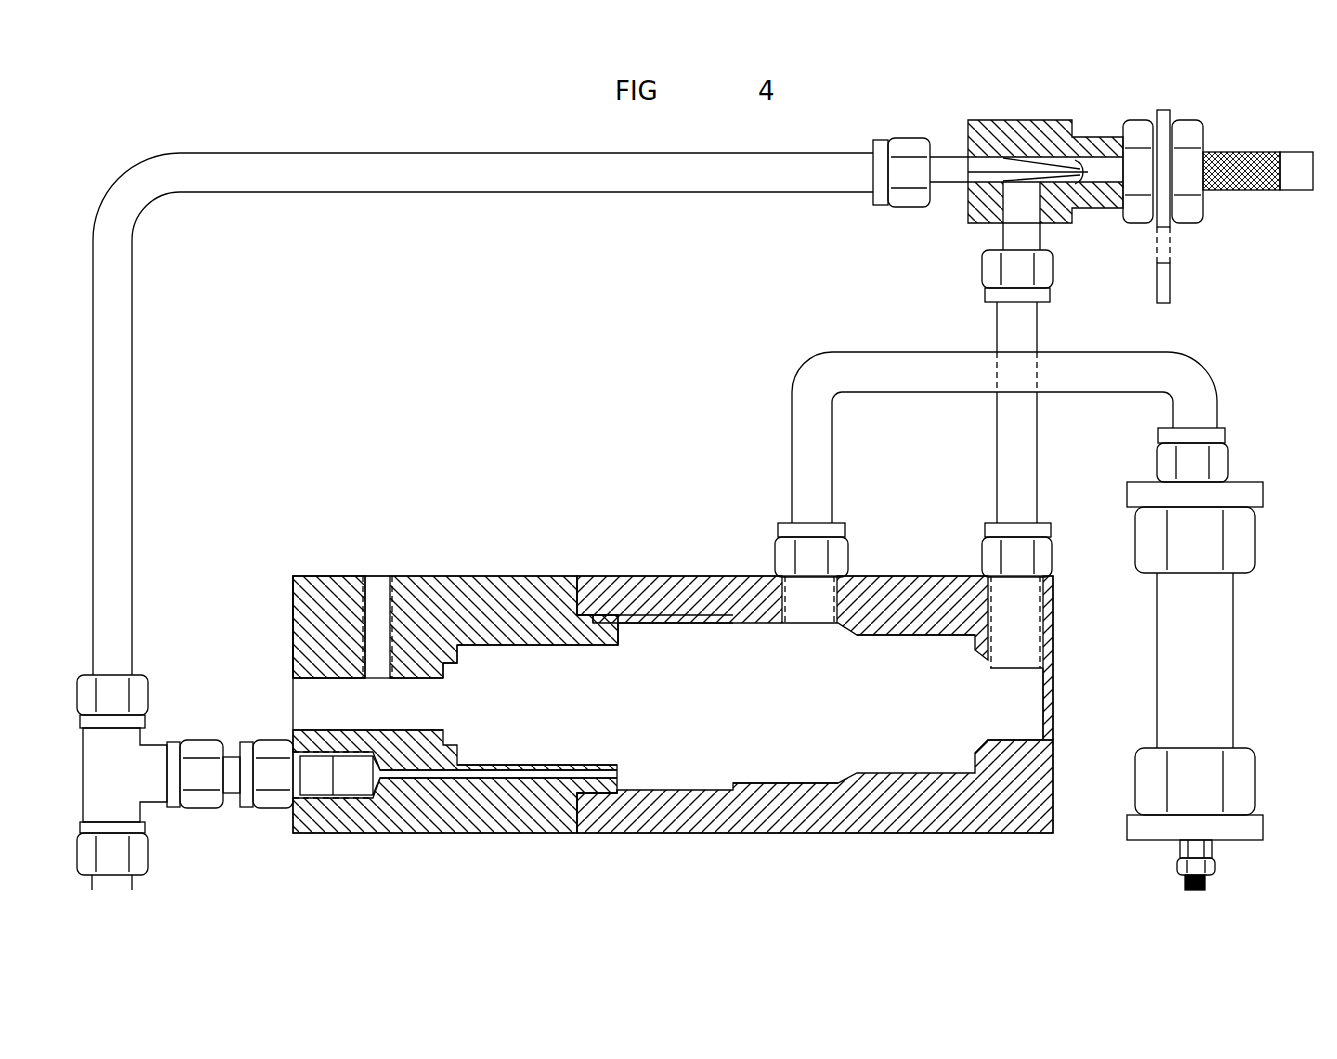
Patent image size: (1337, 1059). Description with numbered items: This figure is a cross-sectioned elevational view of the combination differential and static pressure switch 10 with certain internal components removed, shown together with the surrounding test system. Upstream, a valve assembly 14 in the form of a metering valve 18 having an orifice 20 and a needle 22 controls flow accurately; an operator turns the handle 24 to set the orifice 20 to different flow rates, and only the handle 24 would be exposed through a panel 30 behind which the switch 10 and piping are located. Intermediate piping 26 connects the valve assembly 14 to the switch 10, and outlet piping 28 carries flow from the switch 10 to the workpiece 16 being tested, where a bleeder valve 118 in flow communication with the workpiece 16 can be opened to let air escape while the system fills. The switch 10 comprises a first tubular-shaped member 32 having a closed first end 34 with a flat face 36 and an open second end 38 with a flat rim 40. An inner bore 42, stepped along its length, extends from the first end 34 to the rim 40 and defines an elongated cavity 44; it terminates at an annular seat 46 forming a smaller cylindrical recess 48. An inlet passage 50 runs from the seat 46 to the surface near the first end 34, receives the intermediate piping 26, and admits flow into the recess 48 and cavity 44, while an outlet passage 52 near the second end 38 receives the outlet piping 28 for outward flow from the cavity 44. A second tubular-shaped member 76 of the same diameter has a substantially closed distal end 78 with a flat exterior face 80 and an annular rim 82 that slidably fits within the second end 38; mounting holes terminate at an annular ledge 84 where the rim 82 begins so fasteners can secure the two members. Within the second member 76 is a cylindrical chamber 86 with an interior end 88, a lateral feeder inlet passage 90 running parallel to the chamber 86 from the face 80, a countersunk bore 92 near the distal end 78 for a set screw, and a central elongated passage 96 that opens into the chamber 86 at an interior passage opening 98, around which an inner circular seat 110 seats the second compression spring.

The combination differential and static pressure switch 10 is at (482, 428).
The valve assembly 14 is at (1236, 220).
The workpiece 16 is at (1233, 682).
The metering valve 18 is at (1088, 140).
The orifice 20 is at (953, 172).
The needle 22 is at (1040, 160).
The handle 24 is at (1205, 128).
The intermediate piping 26 is at (995, 322).
The outlet piping 28 is at (1218, 390).
The panel 30 is at (1172, 282).
The first tubular-shaped member 32 is at (616, 575).
The first end 34 is at (1072, 637).
The face 36 is at (1055, 740).
The second end 38 is at (628, 624).
The rim 40 is at (583, 600).
The inner bore 42 is at (921, 630).
The cavity 44 is at (728, 703).
The seat 46 is at (1043, 704).
The recess 48 is at (988, 736).
The inlet passage 50 is at (1017, 595).
The outlet passage 52 is at (787, 606).
The second tubular-shaped member 76 is at (315, 575).
The distal end 78 is at (270, 611).
The exterior face 80 is at (293, 652).
The annular rim 82 is at (664, 780).
The annular ledge 84 is at (573, 837).
The cylindrical chamber 86 is at (420, 704).
The interior end 88 is at (481, 775).
The lateral feeder inlet passage 90 is at (365, 783).
The countersunk bore 92 is at (363, 595).
The elongated passage 96 is at (352, 678).
The interior passage opening 98 is at (443, 678).
The inner circular seat 110 is at (440, 670).
The bleeder valve 118 is at (1215, 868).